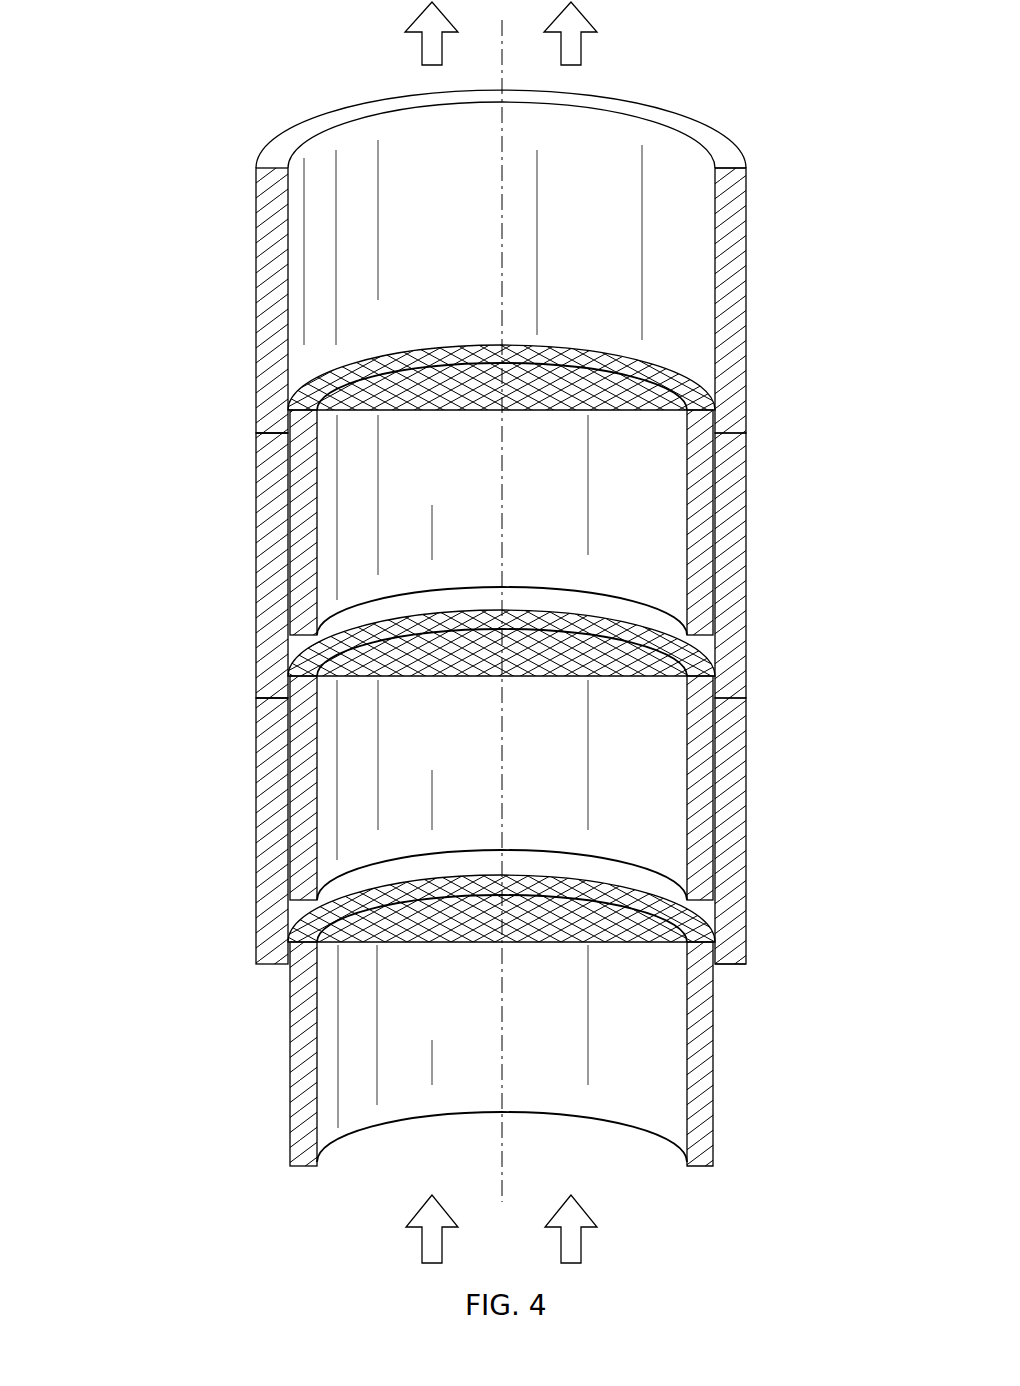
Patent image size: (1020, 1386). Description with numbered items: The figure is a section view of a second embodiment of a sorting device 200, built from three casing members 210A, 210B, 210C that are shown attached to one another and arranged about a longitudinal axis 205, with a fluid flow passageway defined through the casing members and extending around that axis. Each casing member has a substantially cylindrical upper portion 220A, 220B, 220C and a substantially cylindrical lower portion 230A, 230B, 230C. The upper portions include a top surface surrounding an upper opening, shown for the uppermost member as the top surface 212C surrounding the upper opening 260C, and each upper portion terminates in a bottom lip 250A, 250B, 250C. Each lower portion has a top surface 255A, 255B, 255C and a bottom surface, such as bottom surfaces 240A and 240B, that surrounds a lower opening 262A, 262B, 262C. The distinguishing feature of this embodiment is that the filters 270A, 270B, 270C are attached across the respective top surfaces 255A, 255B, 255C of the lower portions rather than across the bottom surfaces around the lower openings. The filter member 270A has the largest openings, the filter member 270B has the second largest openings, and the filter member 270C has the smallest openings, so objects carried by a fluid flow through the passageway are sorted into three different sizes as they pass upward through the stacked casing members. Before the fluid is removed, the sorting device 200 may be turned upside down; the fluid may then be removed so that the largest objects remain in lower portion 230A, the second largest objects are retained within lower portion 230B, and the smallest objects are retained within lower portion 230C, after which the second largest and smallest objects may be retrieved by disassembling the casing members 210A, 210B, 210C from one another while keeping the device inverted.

The sorting device 200 is at (120, 722).
The longitudinal axis 205 is at (503, 1166).
The casing member 210A is at (274, 803).
The casing member 210B is at (275, 540).
The casing member 210C is at (280, 278).
The top surface 212C is at (732, 158).
The upper portion 220A is at (746, 783).
The upper portion 220B is at (748, 530).
The upper portion 220C is at (748, 258).
The lower portion 230A is at (713, 1108).
The lower portion 230B is at (715, 840).
The lower portion 230C is at (715, 575).
The bottom surface 240A is at (280, 655).
The bottom surface 240B is at (713, 915).
The bottom lip 250A is at (735, 965).
The bottom lip 250B is at (735, 700).
The bottom lip 250C is at (733, 440).
The top surface 255A is at (746, 958).
The top surface 255B is at (280, 710).
The top surface 255C is at (290, 445).
The upper opening 260C is at (308, 132).
The lower opening 262A is at (670, 1147).
The lower opening 262B is at (312, 906).
The lower opening 262C is at (687, 640).
The filter member 270A is at (700, 930).
The filter member 270B is at (720, 665).
The filter member 270C is at (690, 380).